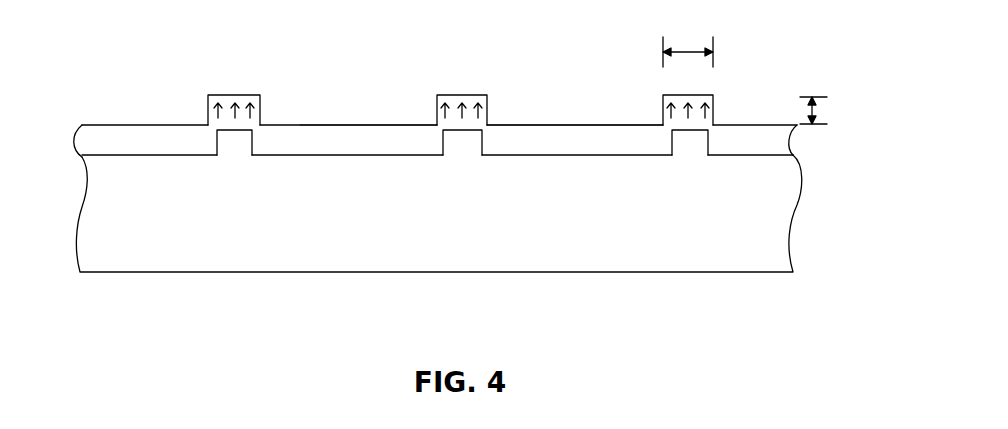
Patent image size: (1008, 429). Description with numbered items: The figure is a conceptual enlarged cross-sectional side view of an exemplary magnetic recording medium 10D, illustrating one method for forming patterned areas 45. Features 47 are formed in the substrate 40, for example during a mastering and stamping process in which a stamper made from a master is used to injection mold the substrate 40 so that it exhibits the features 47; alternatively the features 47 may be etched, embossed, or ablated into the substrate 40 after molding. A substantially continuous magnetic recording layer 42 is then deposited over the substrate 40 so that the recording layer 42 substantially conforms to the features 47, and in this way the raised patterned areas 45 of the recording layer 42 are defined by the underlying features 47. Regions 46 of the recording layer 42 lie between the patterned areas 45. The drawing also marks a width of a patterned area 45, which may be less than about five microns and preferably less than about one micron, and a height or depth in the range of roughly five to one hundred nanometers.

The magnetic recording medium 10D is at (462, 189).
The substrate 40 is at (87, 210).
The magnetic recording layer 42 is at (82, 136).
The patterned areas 45 is at (690, 95).
The flat regions 46 is at (378, 119).
The features 47 is at (242, 138).